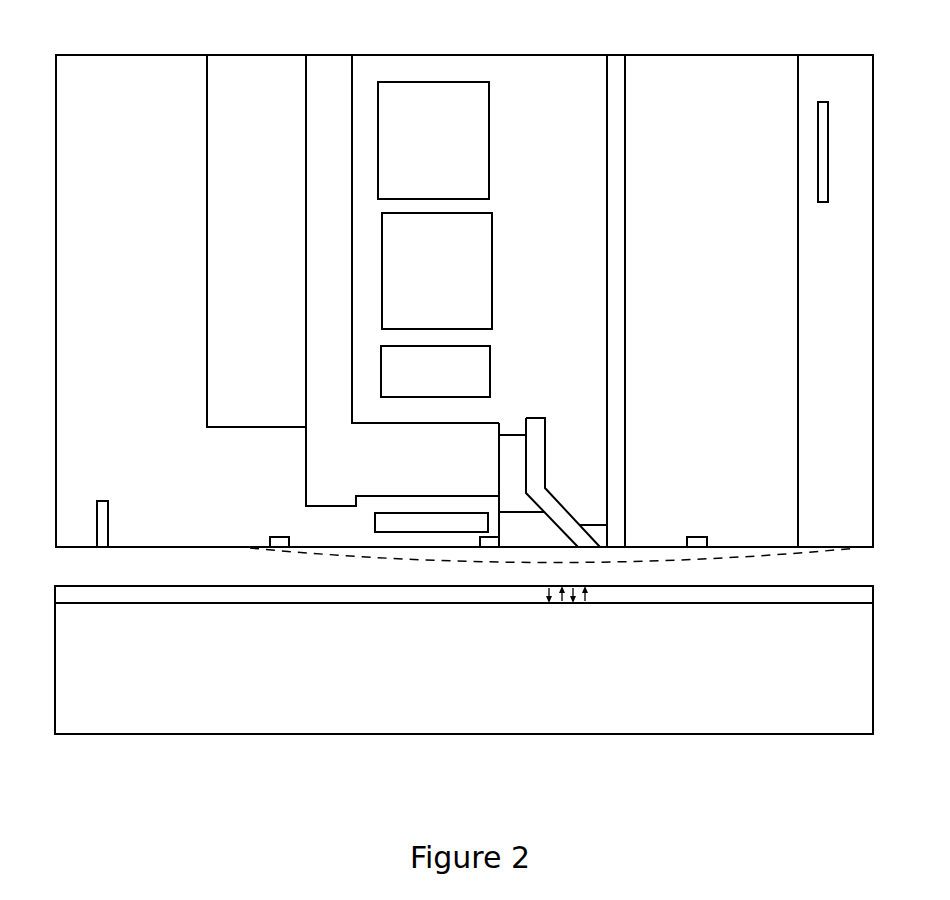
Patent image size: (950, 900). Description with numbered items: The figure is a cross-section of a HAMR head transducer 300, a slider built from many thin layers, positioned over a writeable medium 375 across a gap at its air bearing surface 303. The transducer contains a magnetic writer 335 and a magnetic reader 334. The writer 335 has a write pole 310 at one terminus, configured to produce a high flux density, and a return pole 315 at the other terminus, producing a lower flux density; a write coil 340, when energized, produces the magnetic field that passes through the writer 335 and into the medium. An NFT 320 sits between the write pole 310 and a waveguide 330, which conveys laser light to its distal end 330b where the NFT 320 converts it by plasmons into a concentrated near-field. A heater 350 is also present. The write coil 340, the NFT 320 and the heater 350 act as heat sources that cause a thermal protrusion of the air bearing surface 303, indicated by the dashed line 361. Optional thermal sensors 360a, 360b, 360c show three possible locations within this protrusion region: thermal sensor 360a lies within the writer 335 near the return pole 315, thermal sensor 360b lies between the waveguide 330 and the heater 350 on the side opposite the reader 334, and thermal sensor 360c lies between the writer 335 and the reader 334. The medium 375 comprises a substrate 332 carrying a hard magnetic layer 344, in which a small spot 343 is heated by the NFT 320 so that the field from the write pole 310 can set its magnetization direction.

The head transducer 300 is at (746, 54).
The air bearing surface 303 is at (68, 548).
The write pole 310 is at (538, 428).
The return pole 315 is at (315, 440).
The NFT 320 is at (600, 524).
The waveguide 330 is at (627, 428).
The distal end of the waveguide 330b is at (626, 524).
The substrate 332 is at (464, 660).
The reader 334 is at (108, 512).
The writer 335 is at (181, 178).
The write coil 340 is at (483, 272).
The spot 343 is at (588, 594).
The hard magnetic layer 344 is at (873, 593).
The heater 350 is at (821, 203).
The thermal sensor 360a is at (486, 536).
The thermal sensor 360b is at (698, 536).
The thermal sensor 360c is at (276, 536).
The thermal protrusion 361 is at (788, 560).
The writeable medium 375 is at (264, 785).